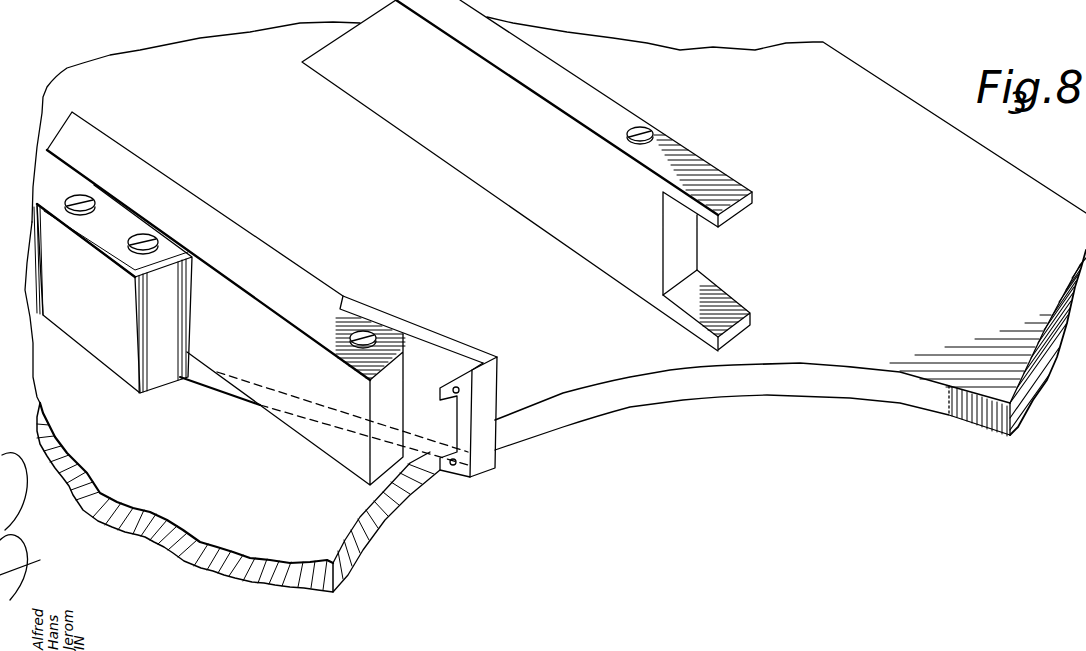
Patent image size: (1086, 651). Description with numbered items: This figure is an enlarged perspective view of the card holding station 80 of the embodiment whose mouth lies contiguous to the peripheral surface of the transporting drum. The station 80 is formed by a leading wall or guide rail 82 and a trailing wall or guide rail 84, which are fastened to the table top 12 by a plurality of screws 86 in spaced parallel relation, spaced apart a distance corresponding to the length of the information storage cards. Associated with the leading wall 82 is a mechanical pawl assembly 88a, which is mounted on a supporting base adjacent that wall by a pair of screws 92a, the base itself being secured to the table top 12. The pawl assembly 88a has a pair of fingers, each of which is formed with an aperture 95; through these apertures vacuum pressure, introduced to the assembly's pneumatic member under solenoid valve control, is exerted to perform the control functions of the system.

The card holding station 80 is at (247, 122).
The leading wall or guide rail 82 is at (87, 143).
The trailing wall or guide rail 84 is at (425, 93).
The screws 86 is at (352, 340).
The pawl assembly 88a is at (126, 196).
The screws 92a is at (128, 244).
The table top 12 is at (557, 413).
The aperture 95 is at (452, 466).